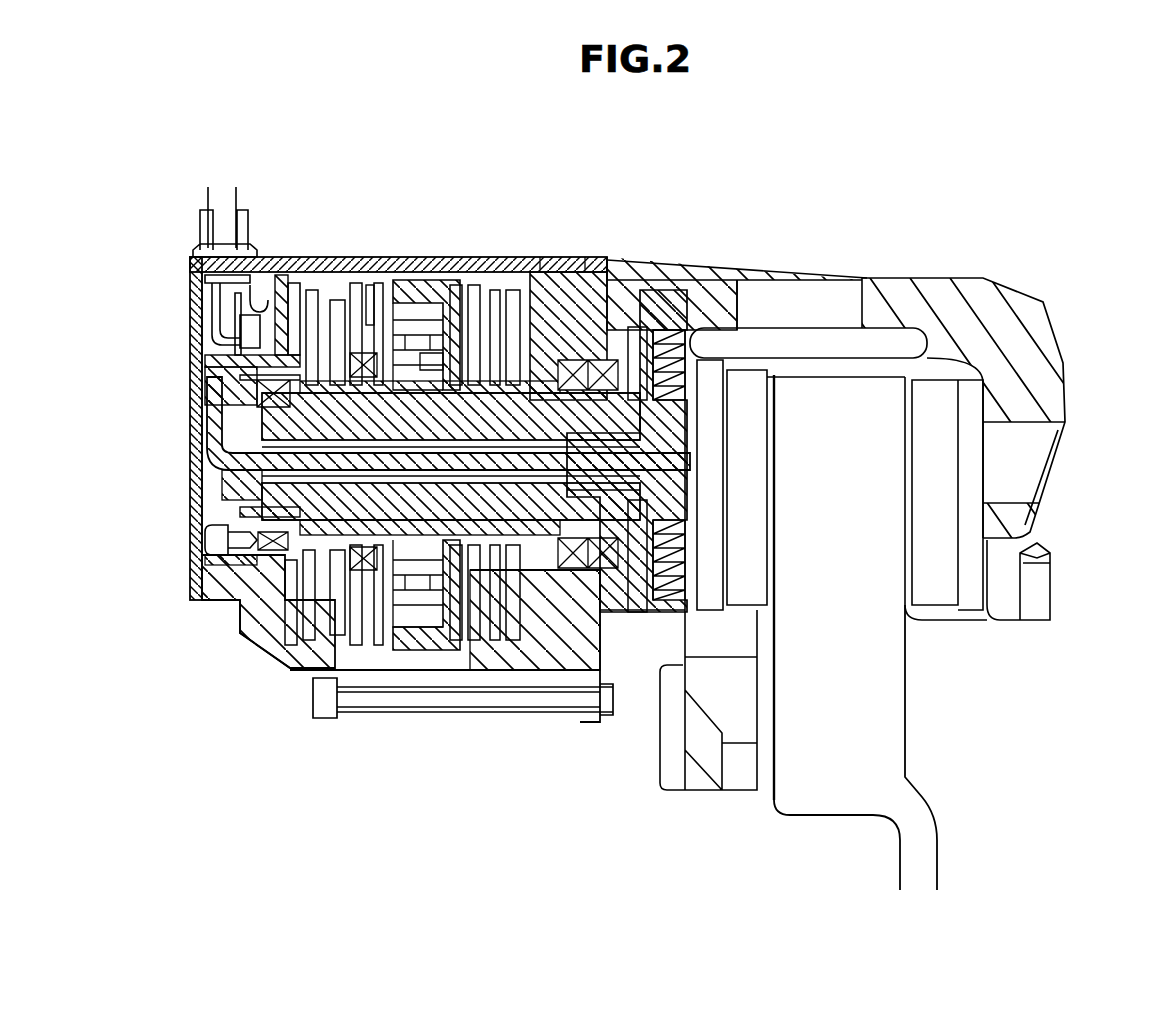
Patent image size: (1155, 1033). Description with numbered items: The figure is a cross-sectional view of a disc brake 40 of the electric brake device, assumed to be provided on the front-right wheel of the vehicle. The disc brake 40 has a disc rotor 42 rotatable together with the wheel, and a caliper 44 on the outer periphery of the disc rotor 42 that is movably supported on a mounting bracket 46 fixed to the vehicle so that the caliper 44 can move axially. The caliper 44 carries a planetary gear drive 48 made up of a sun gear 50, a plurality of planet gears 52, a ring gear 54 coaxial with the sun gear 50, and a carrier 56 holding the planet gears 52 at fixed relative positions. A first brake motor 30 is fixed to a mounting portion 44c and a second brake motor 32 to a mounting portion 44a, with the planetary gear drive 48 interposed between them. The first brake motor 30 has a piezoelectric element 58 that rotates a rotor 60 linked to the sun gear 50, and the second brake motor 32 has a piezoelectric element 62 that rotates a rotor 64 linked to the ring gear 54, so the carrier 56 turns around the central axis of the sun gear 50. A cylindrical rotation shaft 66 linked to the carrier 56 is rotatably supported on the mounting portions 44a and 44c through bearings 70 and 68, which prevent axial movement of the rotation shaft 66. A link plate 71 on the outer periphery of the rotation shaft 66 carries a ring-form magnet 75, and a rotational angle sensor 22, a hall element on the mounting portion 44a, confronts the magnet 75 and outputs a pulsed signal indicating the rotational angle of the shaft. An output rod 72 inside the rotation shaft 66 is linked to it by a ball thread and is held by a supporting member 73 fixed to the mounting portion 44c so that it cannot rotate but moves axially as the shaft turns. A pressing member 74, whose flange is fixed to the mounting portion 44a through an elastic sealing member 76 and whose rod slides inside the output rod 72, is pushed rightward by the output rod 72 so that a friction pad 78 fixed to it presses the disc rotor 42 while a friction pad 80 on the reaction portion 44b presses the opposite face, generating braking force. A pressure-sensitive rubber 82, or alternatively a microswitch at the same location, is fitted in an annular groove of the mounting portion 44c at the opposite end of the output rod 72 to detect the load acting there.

The rotational angle sensor 22 is at (352, 300).
The first brake motor 30 is at (283, 668).
The second brake motor 32 is at (522, 657).
The disc brake 40 is at (826, 219).
The disc rotor 42 is at (905, 715).
The caliper 44 is at (878, 265).
The mounting portion 44a is at (565, 300).
The reaction portion 44b is at (1033, 307).
The mounting portion 44c is at (240, 618).
The mounting bracket 46 is at (1053, 538).
The planetary gear drive 48 is at (425, 276).
The sun gear 50 is at (352, 385).
The planet gears 52 is at (372, 320).
The ring gear 54 is at (460, 330).
The carrier 56 is at (508, 295).
The piezoelectric element 58 is at (300, 640).
The rotor 60 is at (360, 650).
The piezoelectric element 62 is at (498, 650).
The rotor 64 is at (478, 640).
The rotation shaft 66 is at (622, 380).
The bearing 68 is at (260, 393).
The bearing 70 is at (572, 367).
The link plate 71 is at (368, 300).
The output rod 72 is at (280, 425).
The supporting member 73 is at (240, 497).
The pressing member 74 is at (648, 598).
The ring-form magnet 75 is at (368, 300).
The sealing member 76 is at (645, 377).
The friction pad 78 is at (750, 380).
The friction pad 80 is at (920, 597).
The pressure-sensitive rubber 82 is at (250, 508).